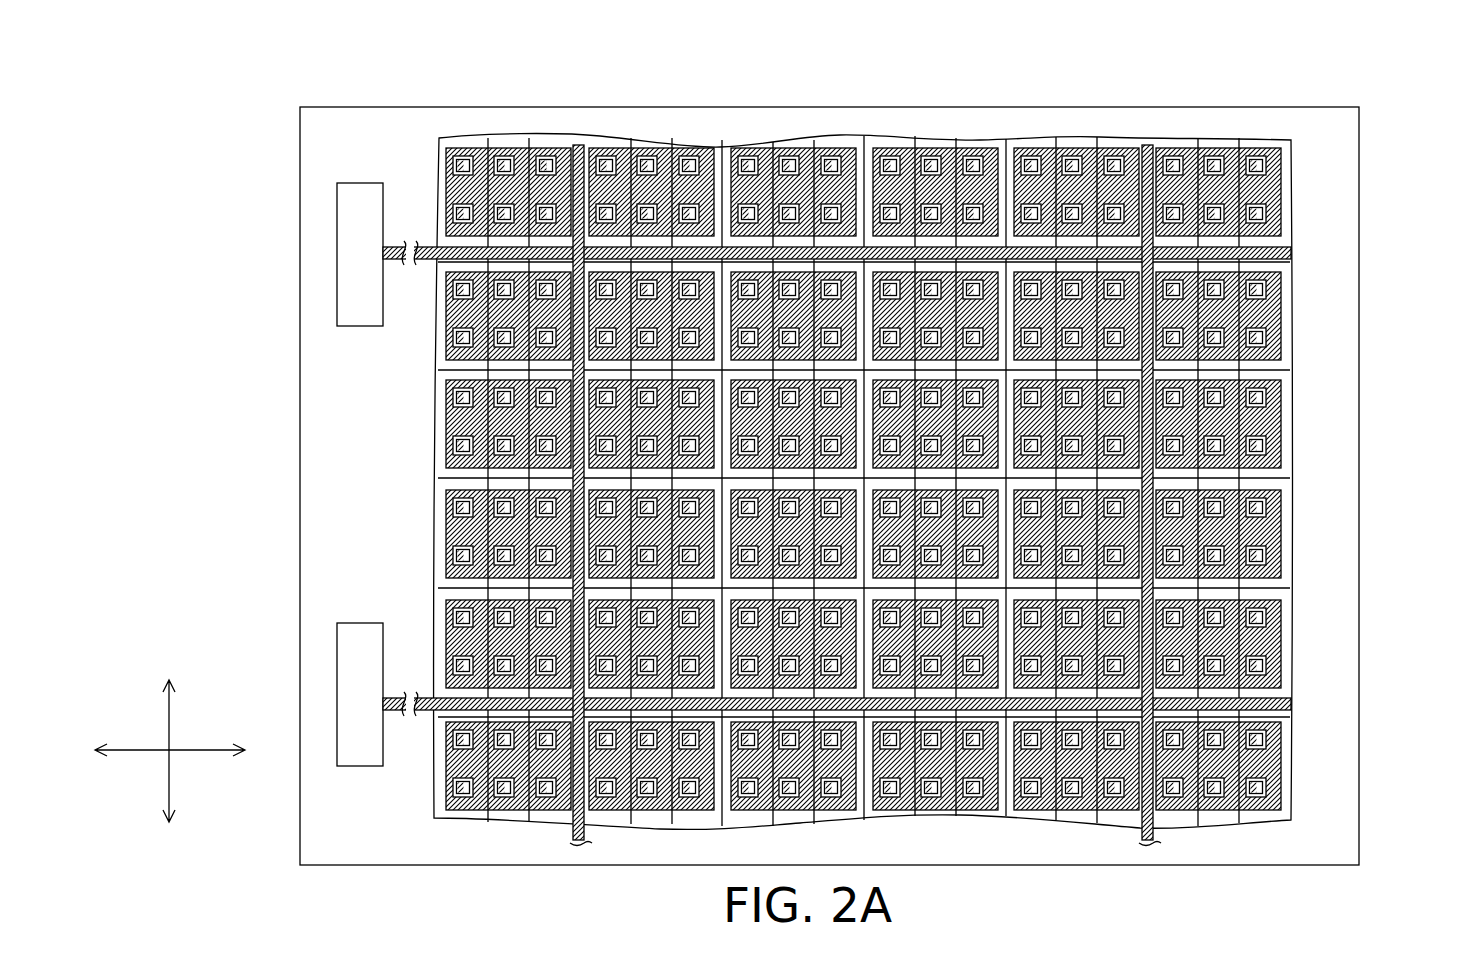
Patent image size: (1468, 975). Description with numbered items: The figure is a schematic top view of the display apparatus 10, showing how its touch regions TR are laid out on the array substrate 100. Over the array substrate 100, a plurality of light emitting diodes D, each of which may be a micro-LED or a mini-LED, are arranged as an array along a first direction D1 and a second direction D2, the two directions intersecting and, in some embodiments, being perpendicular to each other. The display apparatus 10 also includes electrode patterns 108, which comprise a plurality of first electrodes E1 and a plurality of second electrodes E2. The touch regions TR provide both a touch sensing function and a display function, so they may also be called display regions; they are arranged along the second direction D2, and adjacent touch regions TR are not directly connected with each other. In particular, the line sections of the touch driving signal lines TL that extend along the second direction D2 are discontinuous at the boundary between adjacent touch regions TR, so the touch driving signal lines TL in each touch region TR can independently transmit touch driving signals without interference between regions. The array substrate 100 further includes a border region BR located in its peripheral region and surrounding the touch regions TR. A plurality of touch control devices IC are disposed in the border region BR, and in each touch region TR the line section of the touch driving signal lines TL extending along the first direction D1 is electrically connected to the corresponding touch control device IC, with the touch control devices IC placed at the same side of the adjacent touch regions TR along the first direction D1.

The array substrate 100 is at (1359, 346).
The display apparatus 10 is at (1453, 886).
The electrode patterns 108 is at (551, 92).
The light emitting diode D is at (462, 153).
The first electrode E1 is at (557, 157).
The second electrode E2 is at (527, 112).
The touch driving signal line TL is at (1148, 847).
The border region BR is at (1221, 116).
The touch region TR is at (894, 417).
The touch control device IC is at (814, 474).
The first direction D1 is at (186, 752).
The second direction D2 is at (167, 732).